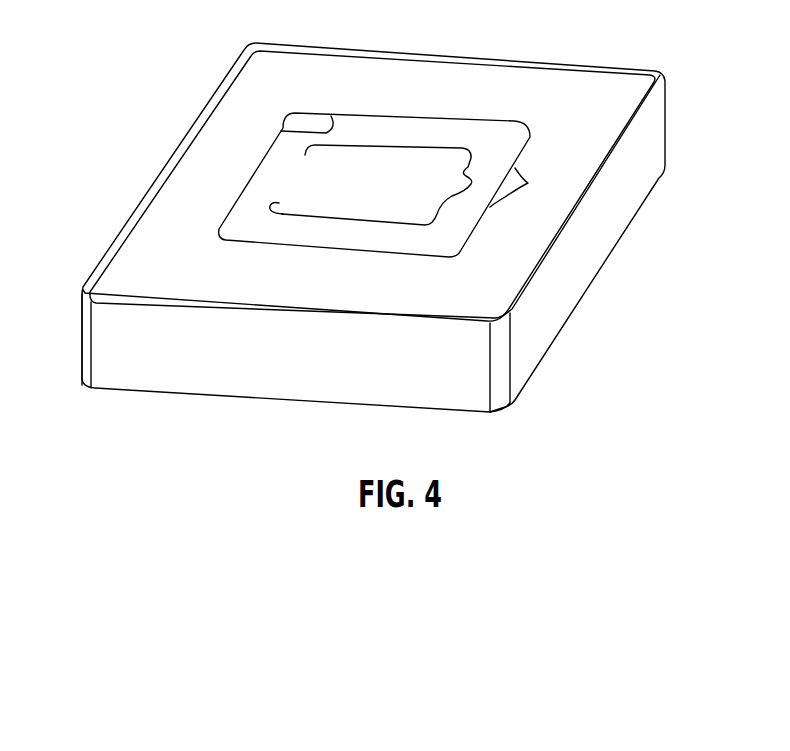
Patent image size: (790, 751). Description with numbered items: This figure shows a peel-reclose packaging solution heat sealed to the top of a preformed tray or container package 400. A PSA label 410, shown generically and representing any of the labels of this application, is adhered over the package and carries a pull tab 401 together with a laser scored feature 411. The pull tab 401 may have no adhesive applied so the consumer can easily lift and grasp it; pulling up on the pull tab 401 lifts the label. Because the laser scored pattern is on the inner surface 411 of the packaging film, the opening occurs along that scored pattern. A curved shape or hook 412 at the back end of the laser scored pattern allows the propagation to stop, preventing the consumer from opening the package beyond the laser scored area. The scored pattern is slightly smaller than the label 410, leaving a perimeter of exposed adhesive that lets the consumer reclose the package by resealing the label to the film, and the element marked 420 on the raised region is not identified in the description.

The preformed tray or container package 400 is at (180, 368).
The pull tab 401 is at (528, 183).
The PSA label 410 is at (281, 128).
The laser scored feature 411 is at (336, 219).
The curved shape or hook 412 is at (265, 213).
The raised rectangular portion 420 is at (473, 134).